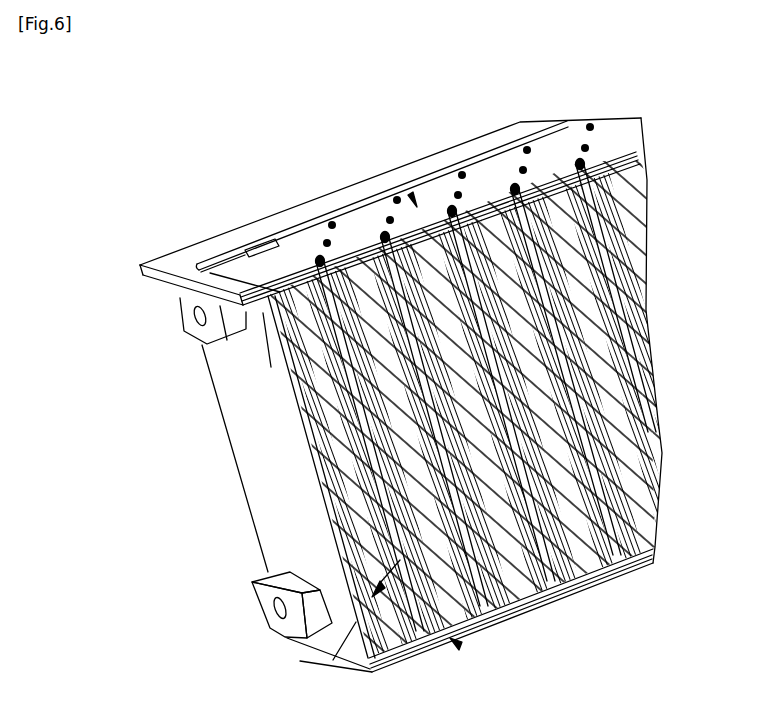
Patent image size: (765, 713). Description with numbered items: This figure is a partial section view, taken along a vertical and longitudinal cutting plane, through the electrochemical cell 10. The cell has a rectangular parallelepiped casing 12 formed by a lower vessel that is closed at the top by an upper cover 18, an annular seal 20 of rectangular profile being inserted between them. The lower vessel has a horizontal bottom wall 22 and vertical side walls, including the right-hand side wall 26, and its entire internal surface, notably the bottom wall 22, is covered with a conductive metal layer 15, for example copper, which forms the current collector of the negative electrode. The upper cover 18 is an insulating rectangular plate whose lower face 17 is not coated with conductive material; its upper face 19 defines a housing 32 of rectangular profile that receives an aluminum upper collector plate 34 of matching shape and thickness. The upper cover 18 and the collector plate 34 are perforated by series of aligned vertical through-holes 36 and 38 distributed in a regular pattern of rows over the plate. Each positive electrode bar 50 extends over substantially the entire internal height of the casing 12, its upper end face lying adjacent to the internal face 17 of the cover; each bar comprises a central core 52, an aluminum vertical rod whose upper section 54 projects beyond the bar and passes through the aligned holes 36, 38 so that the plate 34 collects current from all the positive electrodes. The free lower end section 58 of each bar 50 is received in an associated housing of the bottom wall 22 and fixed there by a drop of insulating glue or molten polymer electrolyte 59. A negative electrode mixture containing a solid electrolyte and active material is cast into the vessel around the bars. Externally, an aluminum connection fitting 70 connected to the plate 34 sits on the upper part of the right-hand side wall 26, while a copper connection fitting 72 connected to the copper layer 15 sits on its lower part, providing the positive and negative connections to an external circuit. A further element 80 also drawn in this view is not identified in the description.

The electrochemical cell 10 is at (352, 340).
The casing 12 is at (382, 409).
The conductive metal layer 15 is at (352, 520).
The lower face of the upper cover 17 is at (598, 258).
The upper cover 18 is at (357, 243).
The upper face of the upper cover 19 is at (305, 265).
The annular seal 20 is at (272, 365).
The bottom wall 22 is at (527, 628).
The right-hand side wall 26 is at (260, 427).
The housing 32 is at (448, 160).
The upper collector plate 34 is at (397, 172).
The through-holes of the upper cover 36 is at (603, 190).
The through-holes of the collector 38 is at (505, 150).
The positive electrode bar 50 is at (333, 663).
The central core 52 is at (296, 465).
The upper section of the core 54 is at (390, 181).
The free lower end section 58 is at (462, 648).
The drop of molten polymer electrolyte 59 is at (492, 627).
The aluminum conductive connection fitting 70 is at (185, 314).
The copper conductive connection fitting 72 is at (240, 605).
The cell separators 80 is at (330, 444).